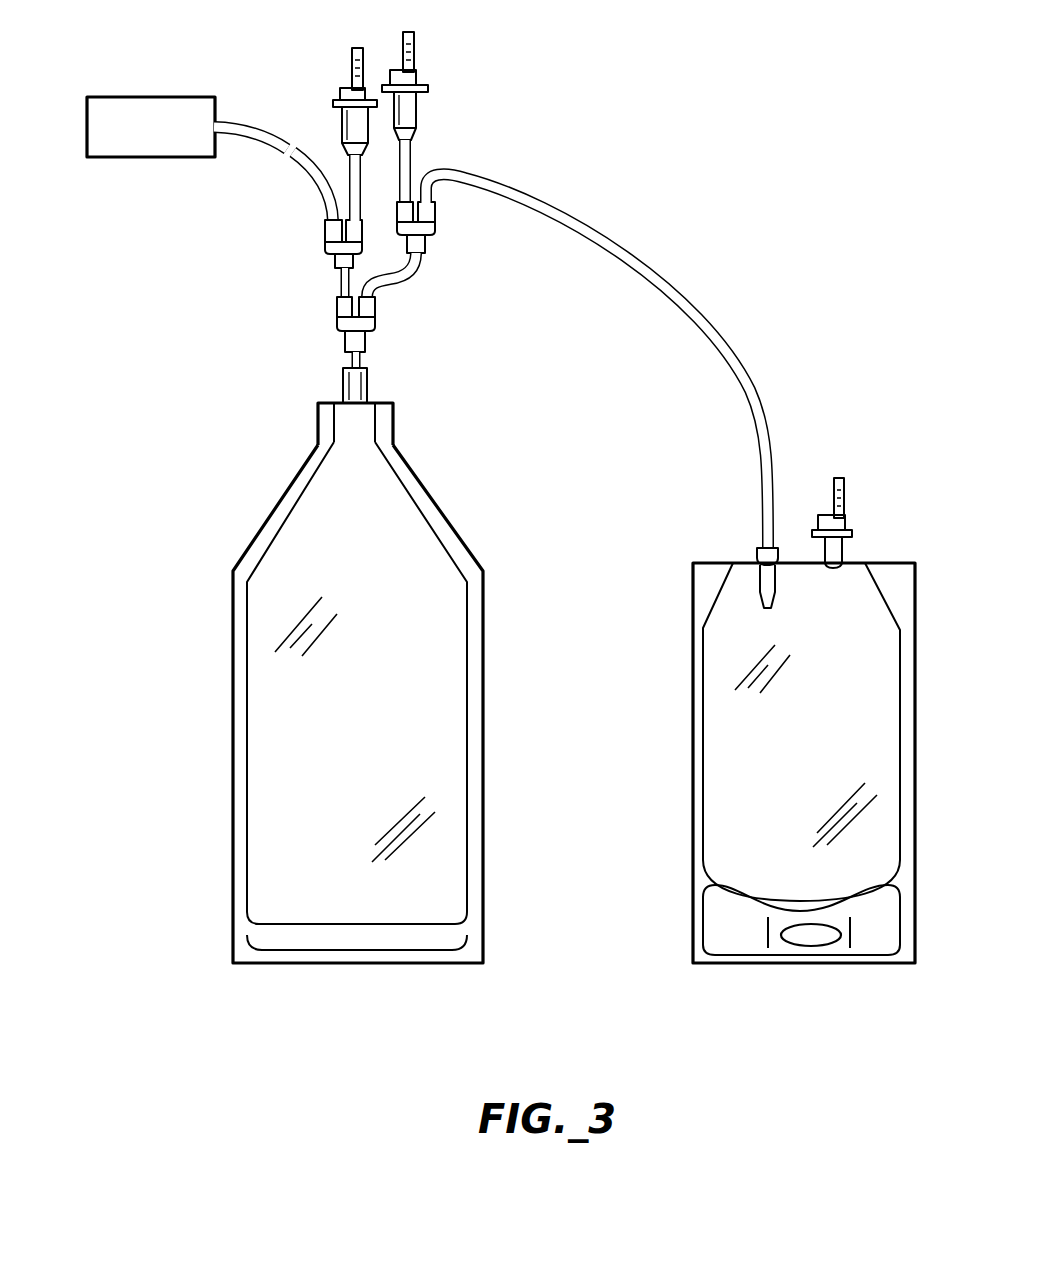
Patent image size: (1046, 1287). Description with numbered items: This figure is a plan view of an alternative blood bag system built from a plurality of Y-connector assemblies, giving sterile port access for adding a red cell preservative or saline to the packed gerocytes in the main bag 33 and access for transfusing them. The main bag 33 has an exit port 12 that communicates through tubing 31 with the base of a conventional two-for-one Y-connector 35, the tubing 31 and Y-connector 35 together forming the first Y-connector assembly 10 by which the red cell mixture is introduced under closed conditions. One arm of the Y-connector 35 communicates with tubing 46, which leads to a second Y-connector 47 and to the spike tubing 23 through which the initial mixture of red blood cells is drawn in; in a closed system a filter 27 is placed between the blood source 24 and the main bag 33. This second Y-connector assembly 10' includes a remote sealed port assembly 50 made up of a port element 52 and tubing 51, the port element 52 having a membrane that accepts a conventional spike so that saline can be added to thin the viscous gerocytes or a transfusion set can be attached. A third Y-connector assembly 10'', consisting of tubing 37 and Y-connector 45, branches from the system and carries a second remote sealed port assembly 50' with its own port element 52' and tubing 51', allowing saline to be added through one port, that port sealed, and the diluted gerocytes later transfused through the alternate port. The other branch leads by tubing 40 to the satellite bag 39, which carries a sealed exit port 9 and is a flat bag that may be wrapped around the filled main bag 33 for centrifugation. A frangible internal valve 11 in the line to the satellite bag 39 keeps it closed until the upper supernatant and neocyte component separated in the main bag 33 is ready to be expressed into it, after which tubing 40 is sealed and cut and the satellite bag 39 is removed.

The sealed exit port 9 is at (845, 528).
The first Y-connector assembly 10 is at (270, 376).
The second Y-connector assembly 10' is at (256, 293).
The third Y-connector assembly 10'' is at (497, 286).
The frangible internal valve 11 is at (775, 588).
The exit port 12 is at (370, 425).
The spike tubing 23 is at (308, 172).
The blood source 24 is at (170, 158).
The filter 27 is at (260, 120).
The tubing 31 is at (368, 377).
The main bag 33 is at (218, 717).
The Y-connector 35 is at (372, 335).
The tubing 37 is at (385, 292).
The satellite bag 39 is at (674, 717).
The tubing 40 is at (640, 262).
The Y-connector 45 is at (428, 235).
The tubing 46 is at (340, 296).
The second Y-connector 47 is at (325, 240).
The remote sealed port assembly 50 is at (256, 71).
The remote sealed port assembly 50' is at (487, 74).
The tubing 51 is at (322, 157).
The tubing 51' is at (448, 147).
The port element 52 is at (319, 70).
The port element 52' is at (447, 52).